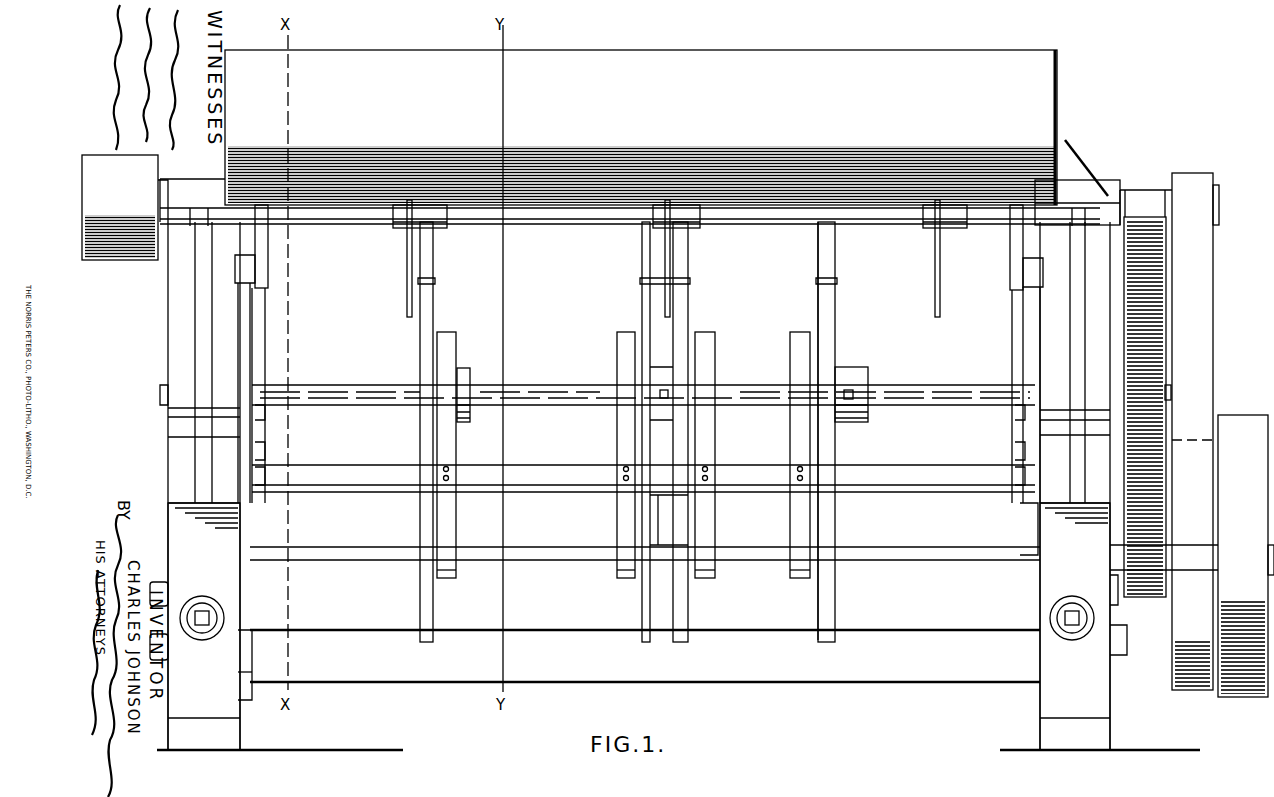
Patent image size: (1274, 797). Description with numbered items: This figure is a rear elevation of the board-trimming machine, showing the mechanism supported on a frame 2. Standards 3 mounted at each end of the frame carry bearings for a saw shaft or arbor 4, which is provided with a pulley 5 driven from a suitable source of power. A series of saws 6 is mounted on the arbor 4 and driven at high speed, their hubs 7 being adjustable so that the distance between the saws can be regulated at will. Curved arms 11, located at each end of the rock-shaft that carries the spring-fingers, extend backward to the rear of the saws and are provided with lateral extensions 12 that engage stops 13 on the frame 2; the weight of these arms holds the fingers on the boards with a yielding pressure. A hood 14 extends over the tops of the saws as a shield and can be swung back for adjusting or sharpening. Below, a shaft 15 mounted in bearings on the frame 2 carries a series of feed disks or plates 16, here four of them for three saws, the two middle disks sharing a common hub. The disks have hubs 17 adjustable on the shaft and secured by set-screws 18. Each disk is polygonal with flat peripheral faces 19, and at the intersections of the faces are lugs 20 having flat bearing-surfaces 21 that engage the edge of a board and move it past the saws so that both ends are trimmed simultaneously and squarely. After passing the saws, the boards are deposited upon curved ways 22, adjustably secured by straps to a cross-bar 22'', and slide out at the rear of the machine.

The frame 2 is at (168, 540).
The standards 3 is at (168, 362).
The saw shaft or arbor 4 is at (862, 216).
The pulley 5 is at (126, 162).
The saws 6 is at (407, 272).
The hubs 7 is at (440, 228).
The curved arms 11 is at (268, 243).
The lateral extensions 12 is at (245, 268).
The stops 13 is at (248, 330).
The hood 14 is at (394, 52).
The shaft 15 is at (906, 392).
The feed disks or plates 16 is at (437, 328).
The hubs 17 is at (470, 366).
The set-screws 18 is at (853, 394).
The flat peripheral faces 19 is at (432, 310).
The lugs 20 is at (818, 282).
The flat bearing-surfaces 21 is at (435, 285).
The curved ways 22 is at (623, 455).
The cross-bar 22'' is at (643, 465).